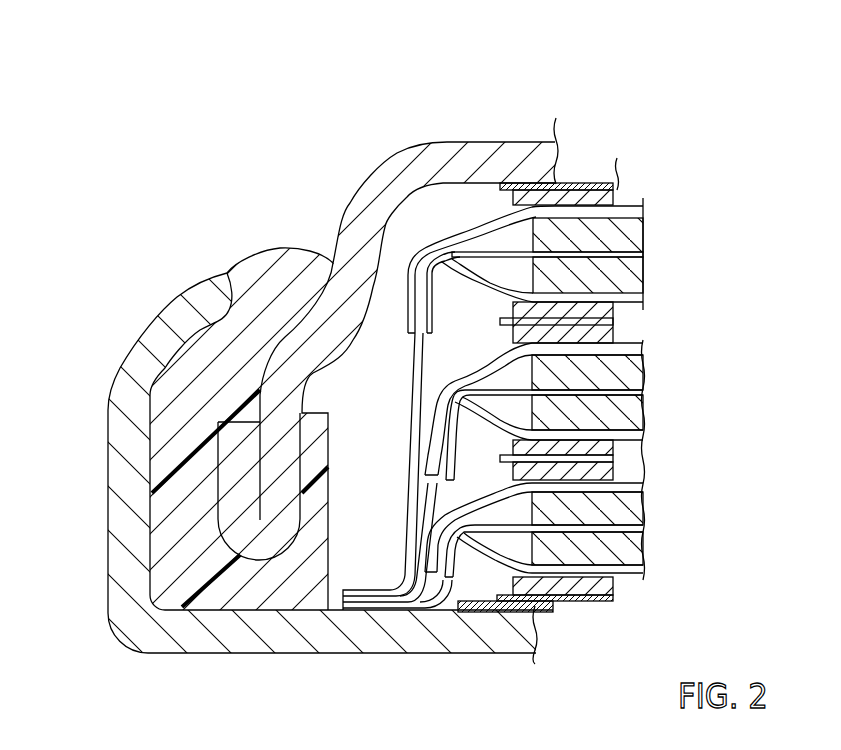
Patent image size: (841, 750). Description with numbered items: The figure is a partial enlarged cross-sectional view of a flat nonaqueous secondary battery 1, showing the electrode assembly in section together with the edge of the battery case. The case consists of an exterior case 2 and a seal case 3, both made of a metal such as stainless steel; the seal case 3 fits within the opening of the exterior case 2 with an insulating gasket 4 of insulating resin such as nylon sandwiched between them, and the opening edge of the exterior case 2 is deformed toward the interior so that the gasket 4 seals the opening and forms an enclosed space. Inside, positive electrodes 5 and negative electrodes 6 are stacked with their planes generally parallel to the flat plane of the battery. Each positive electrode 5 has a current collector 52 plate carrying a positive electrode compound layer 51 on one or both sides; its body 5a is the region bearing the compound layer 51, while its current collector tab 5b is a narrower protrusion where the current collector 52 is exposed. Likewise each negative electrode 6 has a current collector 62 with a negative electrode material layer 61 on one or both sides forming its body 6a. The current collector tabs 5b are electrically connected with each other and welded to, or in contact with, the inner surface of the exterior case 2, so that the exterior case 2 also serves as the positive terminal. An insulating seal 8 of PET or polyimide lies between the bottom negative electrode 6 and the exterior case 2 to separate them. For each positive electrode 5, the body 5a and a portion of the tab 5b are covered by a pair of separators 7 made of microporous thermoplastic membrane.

The flat nonaqueous secondary battery 1 is at (410, 112).
The exterior case 2 is at (118, 467).
The seal case 3 is at (470, 153).
The insulating gasket 4 is at (285, 267).
The positive electrode 5 is at (541, 433).
The body 5a is at (651, 193).
The current collector tab 5b is at (343, 610).
The positive electrode compound layer 51 is at (633, 235).
The current collector 52 is at (637, 253).
The negative electrode 6 is at (607, 425).
The body 6a is at (503, 425).
The negative electrode material layer 61 is at (613, 448).
The current collector 62 is at (615, 458).
The separator 7 is at (622, 572).
The insulating seal 8 is at (543, 613).